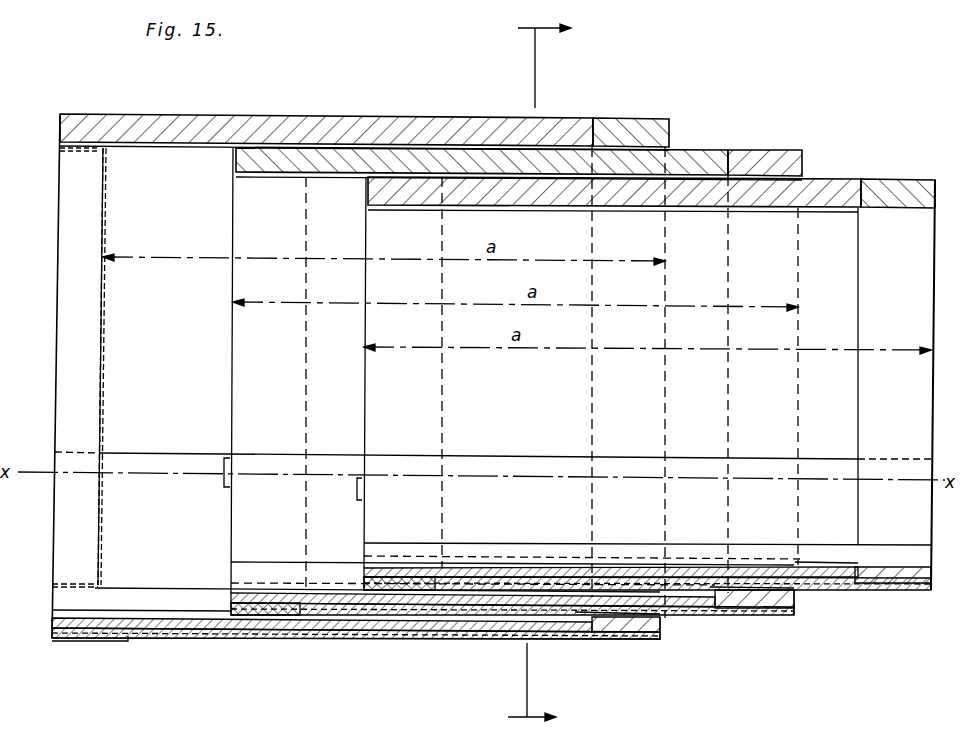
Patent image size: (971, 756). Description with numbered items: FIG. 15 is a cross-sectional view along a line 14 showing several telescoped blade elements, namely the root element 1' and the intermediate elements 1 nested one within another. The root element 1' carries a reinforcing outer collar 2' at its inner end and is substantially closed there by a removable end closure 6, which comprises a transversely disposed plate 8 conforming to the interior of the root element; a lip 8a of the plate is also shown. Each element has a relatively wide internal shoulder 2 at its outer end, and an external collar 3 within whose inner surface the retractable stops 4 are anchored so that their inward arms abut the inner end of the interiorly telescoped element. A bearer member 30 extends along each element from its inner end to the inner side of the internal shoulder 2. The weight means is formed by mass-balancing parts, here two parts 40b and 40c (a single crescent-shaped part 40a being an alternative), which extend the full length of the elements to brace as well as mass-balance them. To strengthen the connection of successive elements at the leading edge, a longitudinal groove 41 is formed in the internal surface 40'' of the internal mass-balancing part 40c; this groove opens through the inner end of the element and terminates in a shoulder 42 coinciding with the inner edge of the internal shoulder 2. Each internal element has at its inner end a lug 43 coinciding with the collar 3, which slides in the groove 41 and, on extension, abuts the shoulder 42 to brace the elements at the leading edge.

The intermediate element 1 is at (455, 615).
The root element 1' is at (356, 652).
The internal shoulder 2 is at (764, 330).
The reinforcing outer collar 2' is at (84, 651).
The external collar 3 is at (268, 163).
The retractable stop 4 is at (223, 485).
The end closure 6 is at (56, 205).
The plate 8 is at (108, 148).
The end plate lip 8a is at (93, 152).
The section line 14 is at (547, 376).
The bearer member 30 is at (197, 130).
The crescent-shaped mass-balancing part 40a is at (100, 605).
The mass-balancing part 40b is at (262, 462).
The internal surface 40'' is at (364, 558).
The internal mass-balancing part 40c is at (150, 632).
The longitudinal groove 41 is at (818, 568).
The shoulder 42 is at (848, 566).
The lug 43 is at (262, 600).